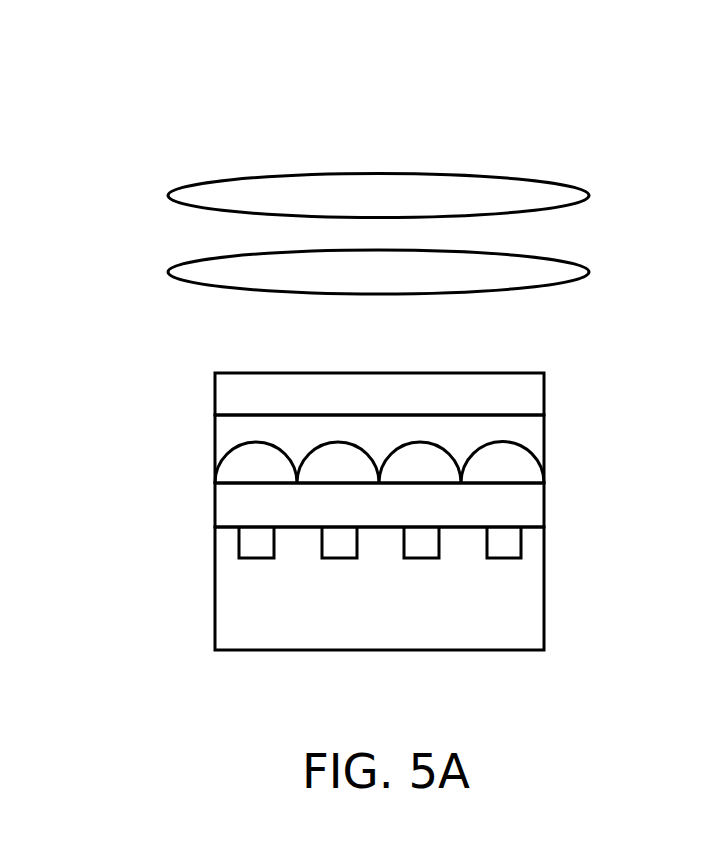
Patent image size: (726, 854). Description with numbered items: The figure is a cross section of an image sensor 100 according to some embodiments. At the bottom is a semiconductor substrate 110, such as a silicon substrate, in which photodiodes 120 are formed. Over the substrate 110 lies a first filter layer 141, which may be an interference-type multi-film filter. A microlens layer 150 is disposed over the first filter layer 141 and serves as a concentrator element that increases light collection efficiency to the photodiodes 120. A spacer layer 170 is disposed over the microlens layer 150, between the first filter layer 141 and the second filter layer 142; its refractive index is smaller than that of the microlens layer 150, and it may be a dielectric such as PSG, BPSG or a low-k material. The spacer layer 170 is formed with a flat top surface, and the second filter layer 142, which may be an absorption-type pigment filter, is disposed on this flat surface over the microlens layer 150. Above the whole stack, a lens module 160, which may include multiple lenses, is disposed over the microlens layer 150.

The image sensor 100 is at (197, 143).
The semiconductor substrate 110 is at (523, 606).
The photodiode 120 is at (503, 544).
The first filter layer 141 is at (523, 506).
The second filter layer 142 is at (523, 394).
The microlens layer 150 is at (513, 461).
The lens module 160 is at (588, 232).
The spacer layer 170 is at (523, 429).